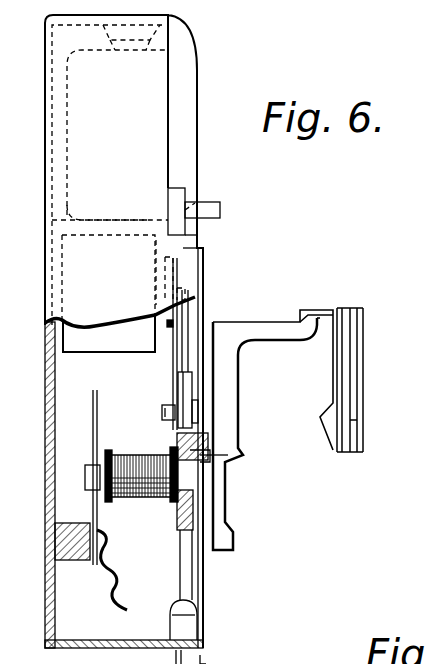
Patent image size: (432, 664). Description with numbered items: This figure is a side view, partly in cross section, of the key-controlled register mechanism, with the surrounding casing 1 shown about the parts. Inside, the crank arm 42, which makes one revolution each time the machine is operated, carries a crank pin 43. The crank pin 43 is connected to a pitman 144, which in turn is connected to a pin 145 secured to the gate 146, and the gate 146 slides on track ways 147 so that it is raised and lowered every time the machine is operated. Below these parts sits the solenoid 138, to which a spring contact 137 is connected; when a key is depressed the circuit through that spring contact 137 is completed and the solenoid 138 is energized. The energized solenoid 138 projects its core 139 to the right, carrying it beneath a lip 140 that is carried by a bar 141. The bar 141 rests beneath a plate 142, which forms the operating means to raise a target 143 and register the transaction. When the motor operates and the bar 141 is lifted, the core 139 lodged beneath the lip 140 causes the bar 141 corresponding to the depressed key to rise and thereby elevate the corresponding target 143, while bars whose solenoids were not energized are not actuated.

The housing 1 is at (205, 68).
The crank arm 42 is at (157, 320).
The crank pin 43 is at (195, 297).
The spring contact 137 is at (97, 422).
The solenoid 138 is at (158, 455).
The core 139 is at (190, 477).
The lip 140 is at (205, 455).
The bar 141 is at (230, 387).
The plate 142 is at (318, 310).
The target 143 is at (358, 392).
The pitman 144 is at (173, 348).
The pin 145 is at (197, 415).
The gate 146 is at (181, 393).
The track ways 147 is at (187, 332).